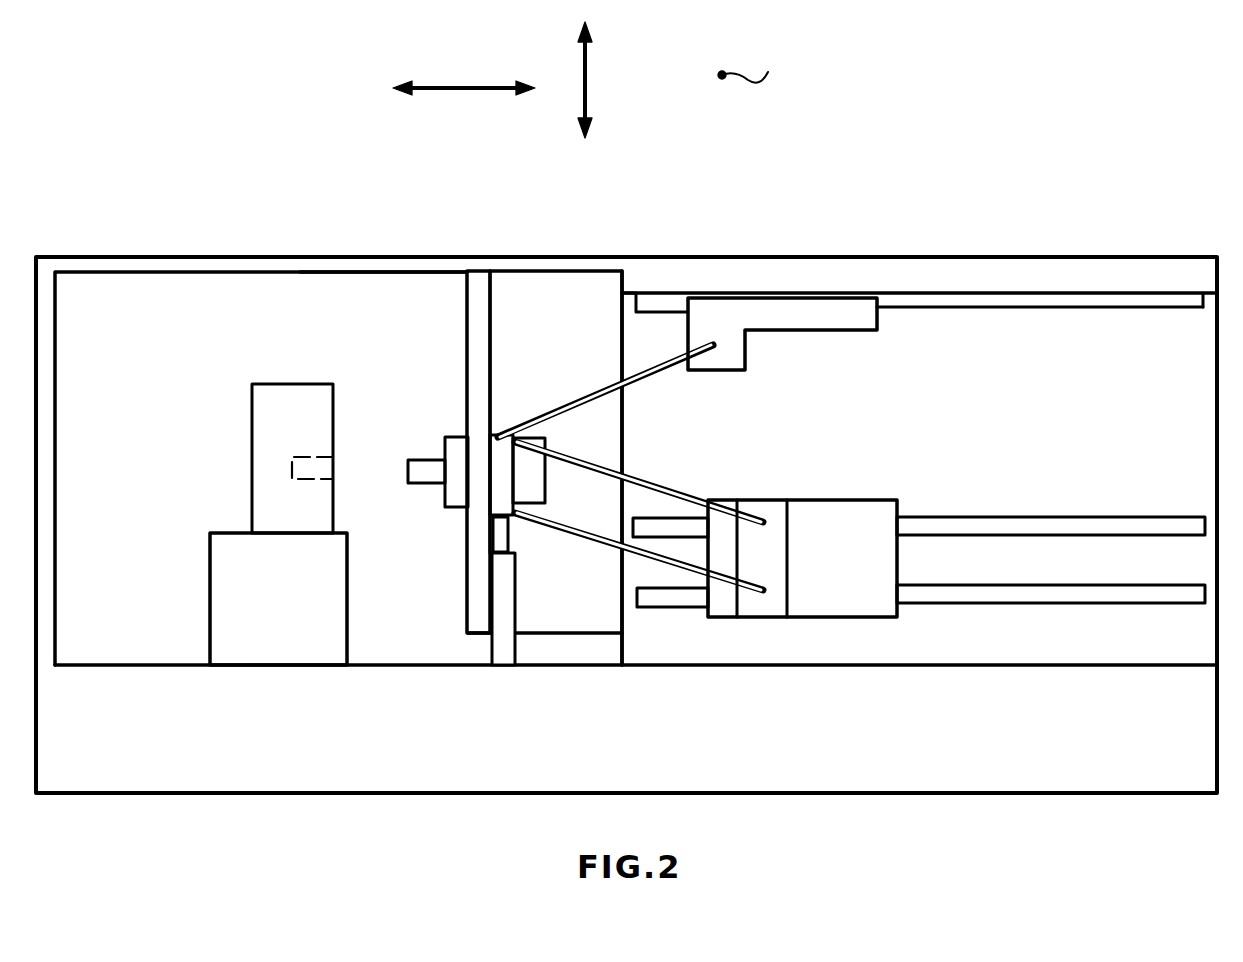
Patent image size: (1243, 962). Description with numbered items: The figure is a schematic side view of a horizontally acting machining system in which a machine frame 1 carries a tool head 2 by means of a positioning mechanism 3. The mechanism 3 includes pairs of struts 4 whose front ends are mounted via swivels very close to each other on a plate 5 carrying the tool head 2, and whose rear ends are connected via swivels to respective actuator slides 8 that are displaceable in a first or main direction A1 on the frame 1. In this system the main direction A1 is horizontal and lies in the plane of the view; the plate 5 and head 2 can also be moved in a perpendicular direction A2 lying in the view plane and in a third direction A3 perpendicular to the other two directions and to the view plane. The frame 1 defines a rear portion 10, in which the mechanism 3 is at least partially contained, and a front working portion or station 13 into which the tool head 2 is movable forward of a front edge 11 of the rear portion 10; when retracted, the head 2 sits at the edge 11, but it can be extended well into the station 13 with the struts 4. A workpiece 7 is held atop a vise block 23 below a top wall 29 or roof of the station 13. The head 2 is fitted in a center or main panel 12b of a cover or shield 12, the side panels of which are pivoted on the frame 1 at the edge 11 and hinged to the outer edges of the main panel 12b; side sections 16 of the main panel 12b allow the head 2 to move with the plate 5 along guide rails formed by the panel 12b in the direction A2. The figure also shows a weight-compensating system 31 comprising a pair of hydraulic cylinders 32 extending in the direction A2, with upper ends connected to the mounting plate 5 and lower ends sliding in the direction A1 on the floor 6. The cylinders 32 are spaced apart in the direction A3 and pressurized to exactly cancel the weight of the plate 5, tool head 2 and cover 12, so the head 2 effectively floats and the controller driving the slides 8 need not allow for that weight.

The machine frame 1 is at (1083, 257).
The tool head 2 is at (456, 492).
The positioning mechanism 3 is at (934, 280).
The struts 4 is at (580, 396).
The plate 5 is at (500, 478).
The floor 6 is at (388, 663).
The workpiece 7 is at (260, 440).
The actuator slides 8 is at (822, 315).
The rear portion 10 is at (660, 273).
The front edge 11 is at (617, 430).
The cover 12 is at (462, 313).
The main panel 12b is at (478, 345).
The front working portion 13 is at (416, 278).
The side sections 16 is at (467, 426).
The vise block 23 is at (225, 572).
The top wall 29 is at (166, 262).
The weight-compensating system 31 is at (533, 600).
The hydraulic cylinders 32 is at (500, 585).
The main direction A1 is at (462, 83).
The perpendicular direction A2 is at (587, 82).
The third direction A3 is at (767, 79).